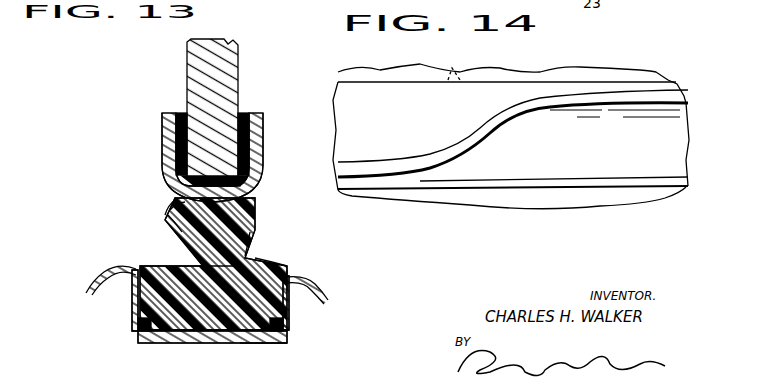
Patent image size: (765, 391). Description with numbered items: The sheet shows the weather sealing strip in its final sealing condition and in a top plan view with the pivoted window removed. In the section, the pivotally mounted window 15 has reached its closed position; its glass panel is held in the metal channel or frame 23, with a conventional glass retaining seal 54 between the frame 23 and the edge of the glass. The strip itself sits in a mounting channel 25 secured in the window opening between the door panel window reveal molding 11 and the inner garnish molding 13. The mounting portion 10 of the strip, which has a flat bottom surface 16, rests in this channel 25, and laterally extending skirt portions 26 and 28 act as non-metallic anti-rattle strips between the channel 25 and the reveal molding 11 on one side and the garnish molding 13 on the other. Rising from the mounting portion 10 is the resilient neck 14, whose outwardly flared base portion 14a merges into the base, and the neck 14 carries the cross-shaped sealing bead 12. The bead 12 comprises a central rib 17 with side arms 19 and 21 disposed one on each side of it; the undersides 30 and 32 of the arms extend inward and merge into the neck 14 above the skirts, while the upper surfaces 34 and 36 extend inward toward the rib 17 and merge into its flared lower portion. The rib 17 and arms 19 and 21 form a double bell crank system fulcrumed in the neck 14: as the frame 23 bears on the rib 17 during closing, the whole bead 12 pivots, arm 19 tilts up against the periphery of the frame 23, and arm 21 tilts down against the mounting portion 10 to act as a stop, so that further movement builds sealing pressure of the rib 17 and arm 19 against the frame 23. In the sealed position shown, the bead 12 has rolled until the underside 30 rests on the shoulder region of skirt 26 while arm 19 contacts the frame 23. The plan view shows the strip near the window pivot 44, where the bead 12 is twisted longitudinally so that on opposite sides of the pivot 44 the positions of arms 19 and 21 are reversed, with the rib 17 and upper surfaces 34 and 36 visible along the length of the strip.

In FIG. 13, the mounting portion 10 is at (210, 342).
In FIG. 13, the door panel window reveal molding 11 is at (92, 282).
In FIG. 13, the sealing bead 12 is at (262, 251).
In FIG. 13, the inner garnish molding 13 is at (322, 299).
In FIG. 13, the neck 14 is at (200, 250).
In FIG. 13, the outwardly flared base portion 14a is at (195, 262).
In FIG. 13, the pivotally mounted window 15 is at (240, 68).
In FIG. 13, the flat bottom surface 16 is at (190, 342).
In FIG. 13, the central rib 17 is at (250, 214).
In FIG. 14, the central rib 17 is at (427, 157).
In FIG. 13, the side arm 19 is at (180, 205).
In FIG. 14, the side arm 19 is at (417, 190).
In FIG. 13, the side arm 21 is at (265, 260).
In FIG. 14, the side arm 21 is at (505, 80).
In FIG. 13, the metal channel or frame 23 is at (256, 152).
In FIG. 13, the mounting channel 25 is at (255, 345).
In FIG. 13, the skirt portion 26 is at (290, 274).
In FIG. 13, the skirt portion 28 is at (140, 333).
In FIG. 13, the underside of side arm 30 is at (175, 222).
In FIG. 13, the underside of side arm 32 is at (252, 242).
In FIG. 14, the upper surface of side arm 34 is at (506, 158).
In FIG. 13, the upper surface of side arm 36 is at (278, 258).
In FIG. 14, the upper surface of side arm 36 is at (352, 105).
In FIG. 14, the window pivot 44 is at (455, 78).
In FIG. 13, the glass retaining seal 54 is at (176, 115).